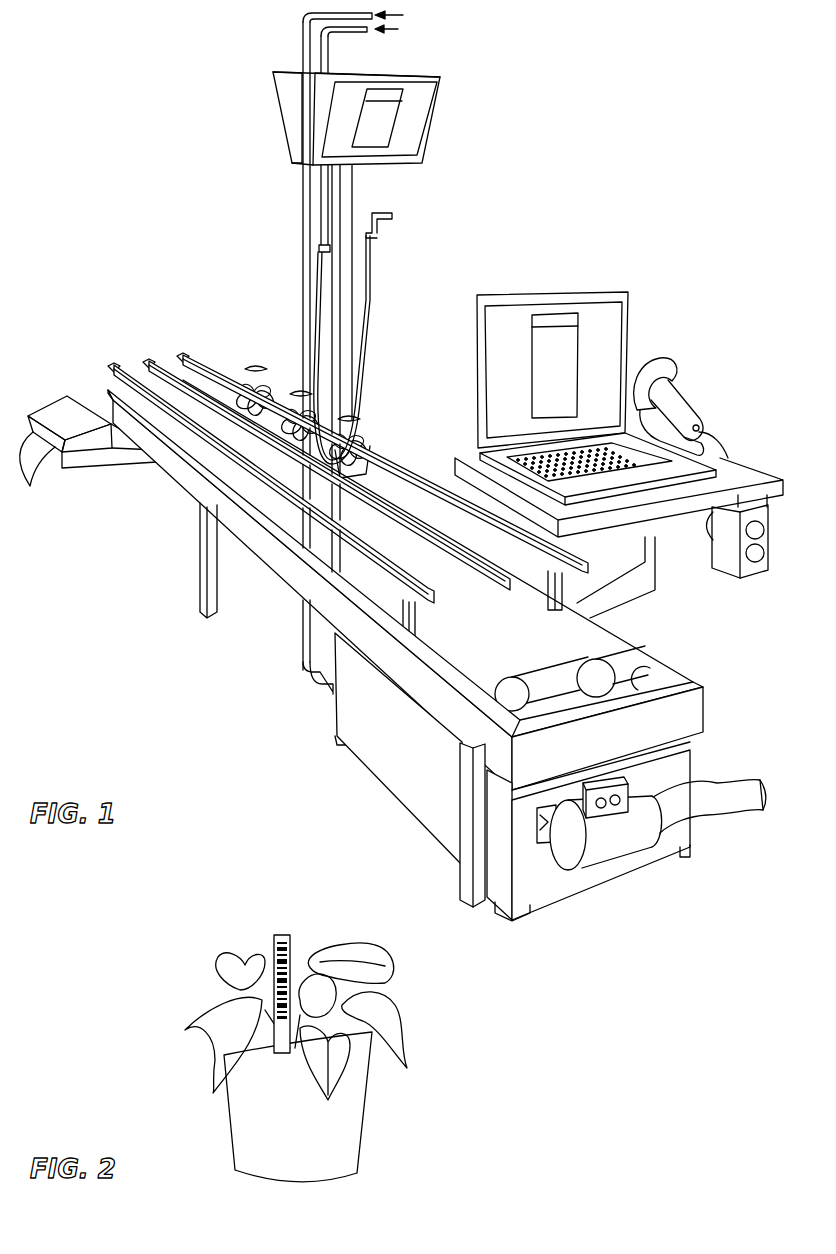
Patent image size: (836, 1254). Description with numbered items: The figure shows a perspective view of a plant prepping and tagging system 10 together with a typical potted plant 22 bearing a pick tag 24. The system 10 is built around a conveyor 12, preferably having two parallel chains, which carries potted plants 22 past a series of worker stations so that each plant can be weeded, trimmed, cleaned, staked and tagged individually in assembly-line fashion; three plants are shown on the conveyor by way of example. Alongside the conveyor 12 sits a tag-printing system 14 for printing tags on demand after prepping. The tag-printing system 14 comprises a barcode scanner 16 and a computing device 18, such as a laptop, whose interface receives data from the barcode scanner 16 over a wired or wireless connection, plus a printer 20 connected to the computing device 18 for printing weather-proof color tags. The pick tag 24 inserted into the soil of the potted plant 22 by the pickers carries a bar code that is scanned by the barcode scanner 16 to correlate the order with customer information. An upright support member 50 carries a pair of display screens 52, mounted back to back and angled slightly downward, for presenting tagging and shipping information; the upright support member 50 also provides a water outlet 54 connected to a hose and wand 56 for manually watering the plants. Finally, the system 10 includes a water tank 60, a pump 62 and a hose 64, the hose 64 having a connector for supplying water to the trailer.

In FIG. 1, the plant prepping and tagging system 10 is at (105, 112).
In FIG. 1, the conveyor 12 is at (695, 700).
In FIG. 1, the tag-printing system 14 is at (406, 382).
In FIG. 1, the barcode scanner 16 is at (672, 380).
In FIG. 1, the computing device 18 is at (620, 312).
In FIG. 1, the printer 20 is at (78, 400).
In FIG. 1, the potted plant 22 is at (298, 383).
In FIG. 2, the potted plant 22 is at (233, 1100).
In FIG. 2, the pick tag 24 is at (281, 944).
In FIG. 1, the upright support member 50 is at (352, 298).
In FIG. 1, the display screens 52 is at (287, 94).
In FIG. 1, the water outlet 54 is at (319, 248).
In FIG. 1, the hose and wand 56 is at (392, 218).
In FIG. 1, the water tank 60 is at (400, 775).
In FIG. 1, the pump 62 is at (617, 843).
In FIG. 1, the hose 64 is at (717, 800).